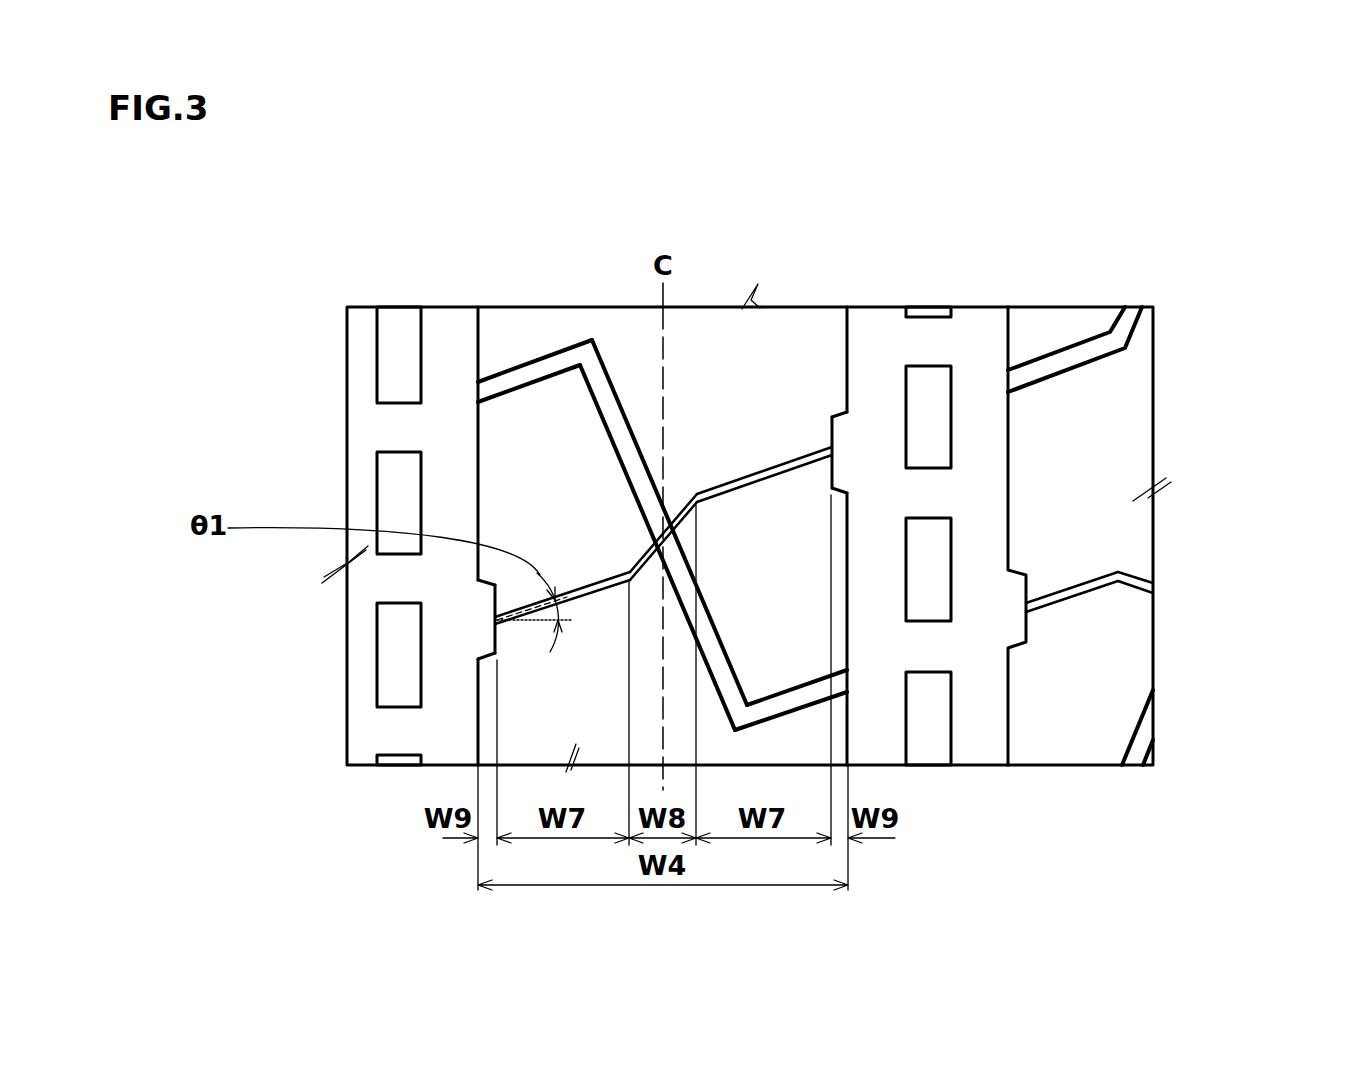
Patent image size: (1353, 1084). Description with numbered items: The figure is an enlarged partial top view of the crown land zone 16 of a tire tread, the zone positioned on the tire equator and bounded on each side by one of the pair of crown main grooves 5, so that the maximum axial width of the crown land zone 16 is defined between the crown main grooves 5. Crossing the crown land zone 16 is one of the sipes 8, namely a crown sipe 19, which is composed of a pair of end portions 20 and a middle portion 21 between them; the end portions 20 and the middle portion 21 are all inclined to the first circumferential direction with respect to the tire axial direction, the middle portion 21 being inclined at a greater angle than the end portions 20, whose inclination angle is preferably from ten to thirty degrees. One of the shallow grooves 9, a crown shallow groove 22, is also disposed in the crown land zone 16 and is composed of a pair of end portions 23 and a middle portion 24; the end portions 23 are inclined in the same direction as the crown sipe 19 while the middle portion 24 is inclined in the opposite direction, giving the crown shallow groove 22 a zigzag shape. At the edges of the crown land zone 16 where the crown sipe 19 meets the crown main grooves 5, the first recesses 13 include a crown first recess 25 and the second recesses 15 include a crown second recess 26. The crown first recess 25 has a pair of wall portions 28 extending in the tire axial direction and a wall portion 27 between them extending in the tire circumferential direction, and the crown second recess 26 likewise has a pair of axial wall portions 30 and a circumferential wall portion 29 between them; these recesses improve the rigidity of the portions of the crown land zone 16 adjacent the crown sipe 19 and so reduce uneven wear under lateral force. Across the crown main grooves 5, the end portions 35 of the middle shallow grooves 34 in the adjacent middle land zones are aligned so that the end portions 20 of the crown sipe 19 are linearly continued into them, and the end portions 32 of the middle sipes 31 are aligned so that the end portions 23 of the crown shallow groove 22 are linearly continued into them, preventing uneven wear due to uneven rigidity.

The crown main groove 5 is at (973, 722).
The sipe 8 is at (498, 478).
The crown sipe 19 is at (498, 478).
The shallow groove 9 is at (662, 432).
The crown shallow groove 22 is at (662, 432).
The first recess 13 is at (320, 654).
The crown first recess 25 is at (320, 654).
The second recess 15 is at (911, 314).
The crown second recess 26 is at (911, 314).
The crown land zone 16 is at (797, 362).
The end portion 20 is at (768, 468).
The middle portion 21 is at (643, 558).
The end portion 23 is at (527, 375).
The middle portion 24 is at (610, 413).
The wall portion 27 is at (495, 610).
The wall portion 28 is at (493, 582).
The wall portion 29 is at (836, 443).
The wall portion 30 is at (848, 417).
The middle sipe 31 is at (1170, 621).
The end portion 32 is at (1072, 592).
The middle shallow groove 34 is at (1075, 290).
The end portion 35 is at (1057, 362).